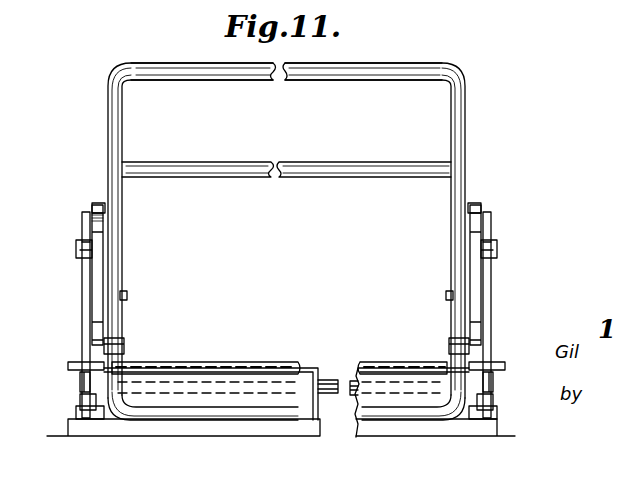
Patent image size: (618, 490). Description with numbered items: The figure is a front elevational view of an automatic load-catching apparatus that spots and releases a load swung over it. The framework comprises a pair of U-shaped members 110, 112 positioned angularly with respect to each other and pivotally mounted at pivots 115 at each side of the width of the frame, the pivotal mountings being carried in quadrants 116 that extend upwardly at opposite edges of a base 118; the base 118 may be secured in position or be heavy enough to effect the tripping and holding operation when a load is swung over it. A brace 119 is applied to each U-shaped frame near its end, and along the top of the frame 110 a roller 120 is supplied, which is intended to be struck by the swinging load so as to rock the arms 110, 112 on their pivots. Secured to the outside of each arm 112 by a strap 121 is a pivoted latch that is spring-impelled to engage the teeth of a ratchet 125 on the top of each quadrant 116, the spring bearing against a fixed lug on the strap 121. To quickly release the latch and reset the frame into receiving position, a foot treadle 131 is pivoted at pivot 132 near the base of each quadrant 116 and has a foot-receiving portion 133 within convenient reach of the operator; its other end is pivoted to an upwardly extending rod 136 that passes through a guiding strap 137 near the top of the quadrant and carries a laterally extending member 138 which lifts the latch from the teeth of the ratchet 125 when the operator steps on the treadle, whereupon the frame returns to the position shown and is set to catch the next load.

The U-shaped member 110 is at (111, 116).
The U-shaped member 112 is at (231, 413).
The pivotal mounting 115 is at (128, 297).
The quadrant 116 is at (97, 271).
The base 118 is at (497, 431).
The brace 119 is at (350, 167).
The roller 120 is at (405, 69).
The strap 121 is at (124, 342).
The ratchet 125 is at (100, 204).
The foot treadle 131 is at (80, 400).
The treadle pivot 132 is at (80, 385).
The foot-receiving portion 133 is at (68, 369).
The upwardly extending rod 136 is at (88, 307).
The guiding strap 137 is at (78, 245).
The laterally extending member 138 is at (85, 227).